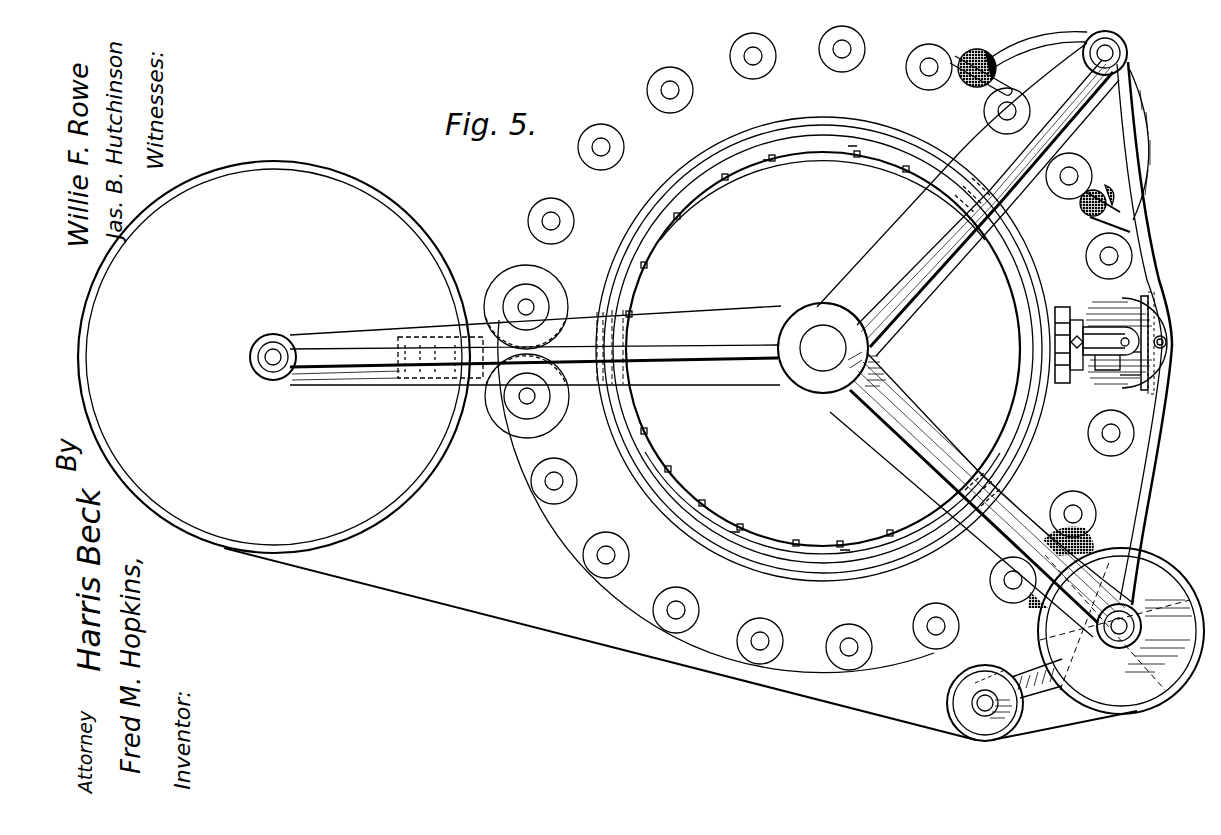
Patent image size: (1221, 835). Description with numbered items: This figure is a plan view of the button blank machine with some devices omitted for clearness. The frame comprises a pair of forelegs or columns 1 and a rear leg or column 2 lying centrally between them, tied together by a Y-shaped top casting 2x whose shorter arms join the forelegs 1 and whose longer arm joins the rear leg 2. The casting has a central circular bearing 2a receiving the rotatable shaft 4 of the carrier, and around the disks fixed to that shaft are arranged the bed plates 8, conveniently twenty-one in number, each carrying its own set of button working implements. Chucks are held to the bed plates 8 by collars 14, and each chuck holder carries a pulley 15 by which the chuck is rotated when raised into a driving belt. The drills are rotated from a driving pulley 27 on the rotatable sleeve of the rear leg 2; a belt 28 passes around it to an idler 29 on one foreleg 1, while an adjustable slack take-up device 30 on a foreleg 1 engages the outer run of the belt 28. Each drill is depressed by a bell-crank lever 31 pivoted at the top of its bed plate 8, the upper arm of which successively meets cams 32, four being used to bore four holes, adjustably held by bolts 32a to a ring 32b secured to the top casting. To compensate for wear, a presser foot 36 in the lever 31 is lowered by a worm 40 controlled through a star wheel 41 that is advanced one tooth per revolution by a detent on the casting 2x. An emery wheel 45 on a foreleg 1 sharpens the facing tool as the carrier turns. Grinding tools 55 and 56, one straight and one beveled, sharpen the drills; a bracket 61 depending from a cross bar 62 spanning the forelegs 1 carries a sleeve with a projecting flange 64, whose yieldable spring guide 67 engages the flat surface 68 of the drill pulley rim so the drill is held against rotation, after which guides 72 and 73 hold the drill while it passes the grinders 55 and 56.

The forelegs or columns 1 is at (1126, 50).
The rear leg or column 2 is at (250, 357).
The circular bearings 2a is at (812, 318).
The top casting 2x is at (711, 340).
The rotatable shaft 4 is at (823, 348).
The bed plates 8 is at (1066, 384).
The collars 14 is at (694, 92).
The pulley 15 is at (556, 420).
The driving pulley 27 is at (274, 357).
The belt 28 is at (598, 644).
The idler 29 is at (1121, 631).
The adjustable slack take-up device 30 is at (990, 668).
The bell-crank lever 31 is at (1094, 330).
The cams 32 is at (845, 128).
The bolts 32a is at (690, 212).
The ring 32b is at (731, 528).
The presser foot 36 is at (1108, 358).
The worm 40 is at (1113, 325).
The star wheel 41 is at (1127, 310).
The emery wheel 45 is at (1090, 548).
The grinding tool 55 is at (1090, 208).
The grinding tool 56 is at (968, 84).
The bracket 61 is at (1167, 342).
The cross bar 62 is at (1148, 262).
The projecting flange 64 is at (1150, 320).
The yieldable spring metal guide 67 is at (1128, 384).
The flat surface 68 is at (1141, 353).
The upper guide 72 is at (1108, 232).
The lower guide 73 is at (1003, 92).